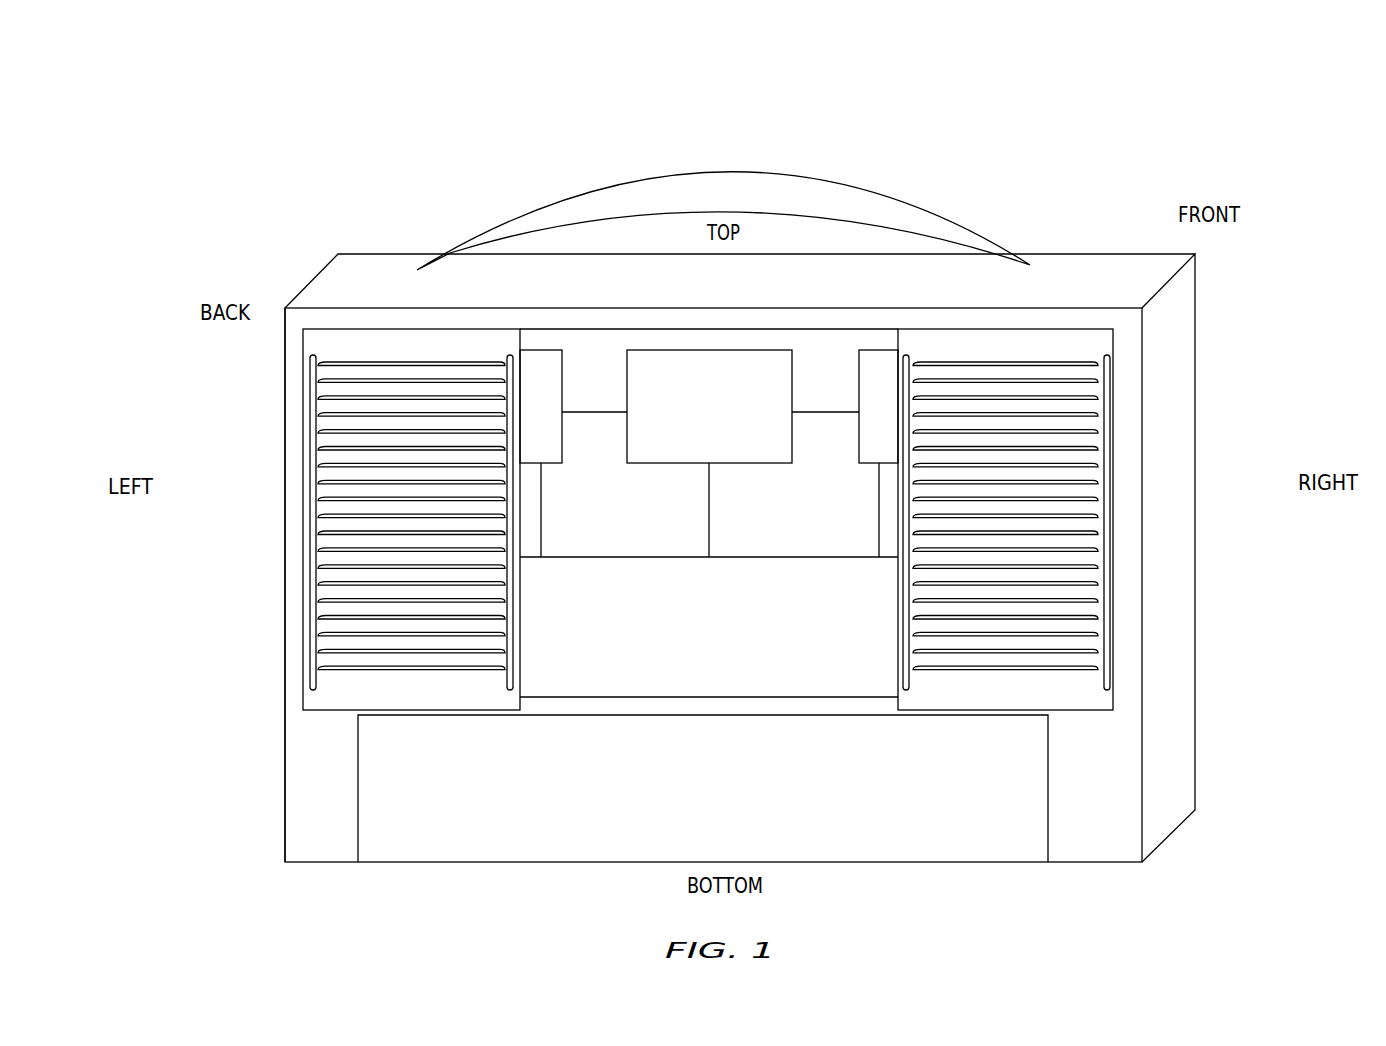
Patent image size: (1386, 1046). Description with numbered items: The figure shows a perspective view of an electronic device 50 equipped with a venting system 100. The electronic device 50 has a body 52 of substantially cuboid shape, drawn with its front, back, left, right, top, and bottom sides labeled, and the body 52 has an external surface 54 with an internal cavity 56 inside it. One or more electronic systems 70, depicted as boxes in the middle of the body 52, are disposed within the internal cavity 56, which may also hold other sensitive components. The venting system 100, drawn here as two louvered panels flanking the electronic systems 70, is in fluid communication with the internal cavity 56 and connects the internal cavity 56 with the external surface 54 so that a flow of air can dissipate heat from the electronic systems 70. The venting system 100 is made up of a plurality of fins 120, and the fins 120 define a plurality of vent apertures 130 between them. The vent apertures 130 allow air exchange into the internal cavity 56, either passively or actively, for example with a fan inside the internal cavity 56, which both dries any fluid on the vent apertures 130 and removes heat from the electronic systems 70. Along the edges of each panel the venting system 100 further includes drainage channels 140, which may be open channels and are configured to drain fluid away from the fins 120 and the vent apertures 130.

The electronic device 50 is at (662, 152).
The body 52 is at (353, 232).
The external surface 54 is at (295, 413).
The internal cavity 56 is at (748, 340).
The electronic systems 70 is at (661, 350).
The venting system 100 is at (402, 340).
The fins 120 is at (355, 593).
The vent apertures 130 is at (325, 472).
The drainage channels 140 is at (906, 362).